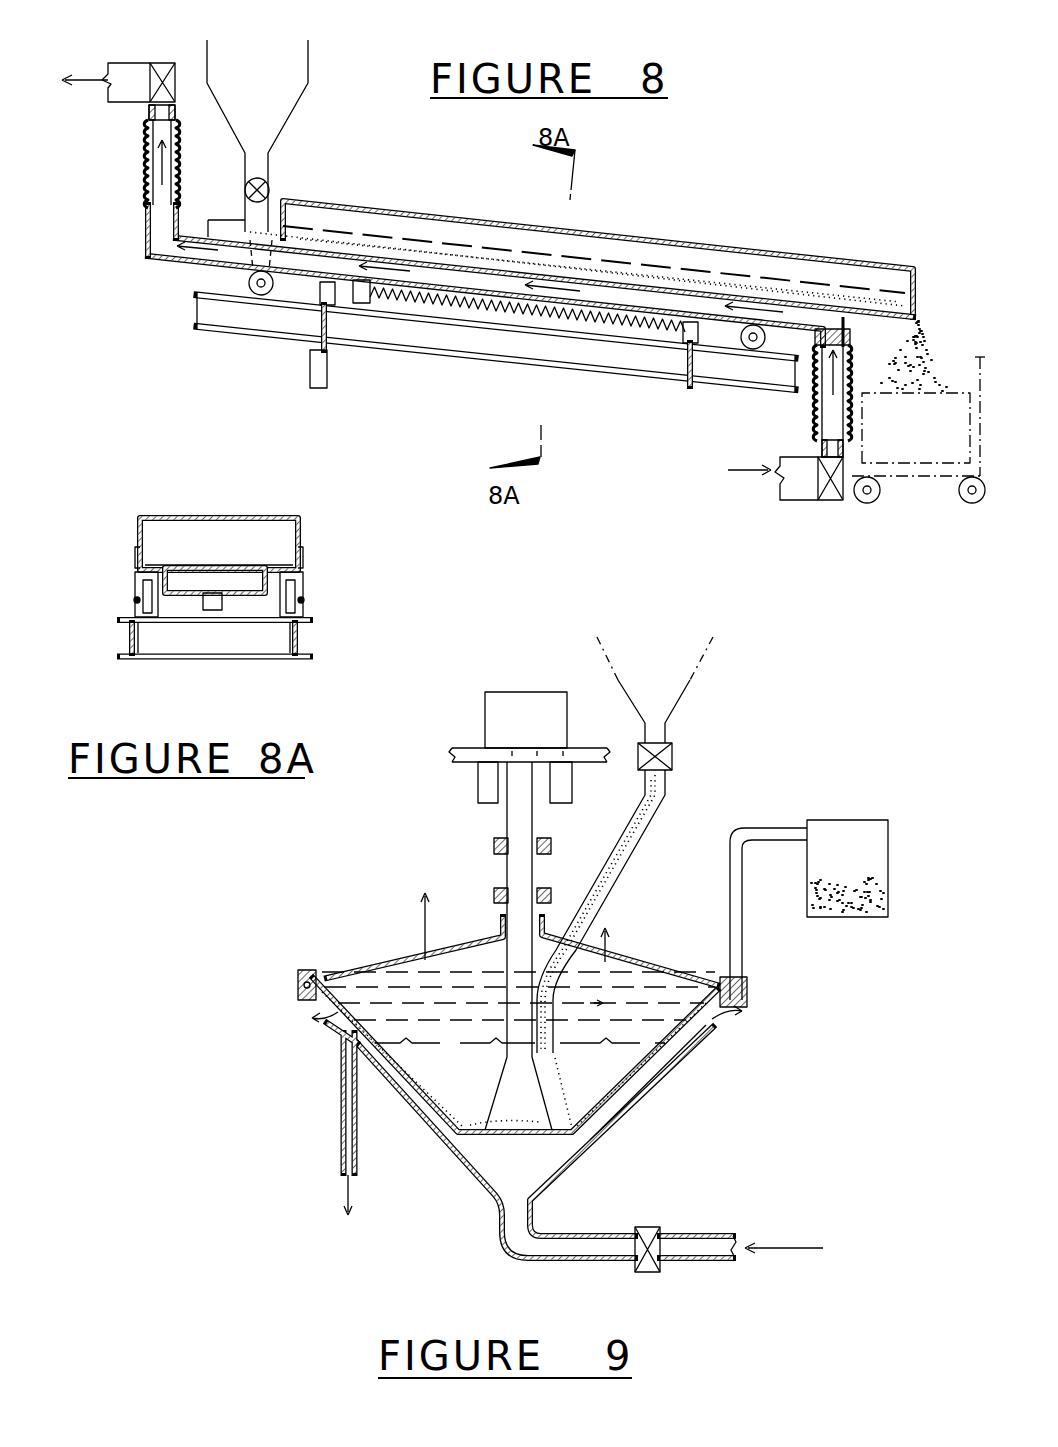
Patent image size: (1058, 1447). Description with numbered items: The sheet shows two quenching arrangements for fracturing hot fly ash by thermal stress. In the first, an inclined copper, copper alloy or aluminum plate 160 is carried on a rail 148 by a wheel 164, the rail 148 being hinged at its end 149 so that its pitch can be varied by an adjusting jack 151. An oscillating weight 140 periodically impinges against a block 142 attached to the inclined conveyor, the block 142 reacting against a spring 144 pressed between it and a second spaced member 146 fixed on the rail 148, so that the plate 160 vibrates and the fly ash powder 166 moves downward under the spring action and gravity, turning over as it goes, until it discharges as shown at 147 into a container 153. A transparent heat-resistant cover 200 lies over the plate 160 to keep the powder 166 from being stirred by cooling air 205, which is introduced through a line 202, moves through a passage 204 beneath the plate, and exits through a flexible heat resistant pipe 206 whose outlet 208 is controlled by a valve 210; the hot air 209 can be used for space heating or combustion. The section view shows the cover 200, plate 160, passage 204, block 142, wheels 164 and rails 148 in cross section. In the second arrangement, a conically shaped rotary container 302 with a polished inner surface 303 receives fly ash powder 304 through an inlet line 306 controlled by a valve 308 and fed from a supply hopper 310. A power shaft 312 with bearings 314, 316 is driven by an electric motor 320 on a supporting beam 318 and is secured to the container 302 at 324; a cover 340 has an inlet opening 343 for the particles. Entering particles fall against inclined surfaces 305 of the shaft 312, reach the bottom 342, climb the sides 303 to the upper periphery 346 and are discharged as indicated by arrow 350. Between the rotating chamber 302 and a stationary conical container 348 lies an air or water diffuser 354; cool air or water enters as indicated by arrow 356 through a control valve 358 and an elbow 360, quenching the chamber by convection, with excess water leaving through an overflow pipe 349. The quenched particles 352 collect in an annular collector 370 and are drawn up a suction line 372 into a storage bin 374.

In FIG. 8, the oscillating weight 140 is at (325, 292).
In FIG. 8, the block 142 is at (362, 303).
In FIG. 8A, the block 142 is at (213, 603).
In FIG. 8, the spring 144 is at (600, 328).
In FIG. 8, the second spaced member 146 is at (692, 318).
In FIG. 8, the discharge 147 is at (927, 357).
In FIG. 8, the rail 148 is at (483, 337).
In FIG. 8A, the rail 148 is at (128, 637).
In FIG. 8, the hinged end 149 is at (795, 390).
In FIG. 8, the adjusting jack 151 is at (318, 366).
In FIG. 8, the container 153 is at (910, 438).
In FIG. 8, the plate 160 is at (470, 268).
In FIG. 8A, the plate 160 is at (188, 562).
In FIG. 8, the wheel 164 is at (762, 330).
In FIG. 8A, the wheel 164 is at (140, 590).
In FIG. 8, the powder 166 is at (278, 237).
In FIG. 8, the transparent heat-resistant cover 200 is at (606, 232).
In FIG. 8A, the transparent heat-resistant cover 200 is at (228, 519).
In FIG. 8, the line 202 is at (815, 417).
In FIG. 8, the passage 204 is at (663, 307).
In FIG. 8A, the passage 204 is at (197, 578).
In FIG. 8, the cooling air 205 is at (837, 377).
In FIG. 8, the flexible heat resistant pipe 206 is at (147, 188).
In FIG. 8, the outlet 208 is at (135, 104).
In FIG. 8, the hot air 209 is at (79, 83).
In FIG. 8, the valve 210 is at (165, 63).
In FIG. 9, the container 302 is at (630, 1100).
In FIG. 9, the polished inner surface 303 is at (697, 1027).
In FIG. 9, the fly ash powder 304 is at (653, 1060).
In FIG. 9, the inclined surfaces 305 is at (490, 1097).
In FIG. 9, the inlet line 306 is at (647, 830).
In FIG. 9, the valve 308 is at (668, 757).
In FIG. 9, the supply hopper 310 is at (692, 676).
In FIG. 9, the power shaft 312 is at (516, 950).
In FIG. 9, the bearing 314 is at (493, 847).
In FIG. 9, the bearing 316 is at (493, 897).
In FIG. 9, the supporting beam 318 is at (487, 783).
In FIG. 9, the electric motor 320 is at (530, 708).
In FIG. 9, the securing point 324 is at (515, 1122).
In FIG. 9, the cover 340 is at (626, 957).
In FIG. 9, the bottom 342 is at (463, 1117).
In FIG. 9, the inlet opening 343 is at (580, 935).
In FIG. 9, the upper periphery 346 is at (300, 974).
In FIG. 9, the stationary conical container 348 is at (570, 1167).
In FIG. 9, the overflow pipe 349 is at (338, 1162).
In FIG. 9, the discharge arrow 350 is at (317, 972).
In FIG. 9, the quenched particles 352 is at (302, 988).
In FIG. 9, the air or water diffuser 354 is at (590, 1130).
In FIG. 9, the inlet supply arrow 356 is at (797, 1248).
In FIG. 9, the control valve 358 is at (650, 1265).
In FIG. 9, the elbow 360 is at (515, 1250).
In FIG. 9, the annular collector 370 is at (748, 986).
In FIG. 9, the suction line 372 is at (737, 883).
In FIG. 9, the storage bin 374 is at (838, 847).